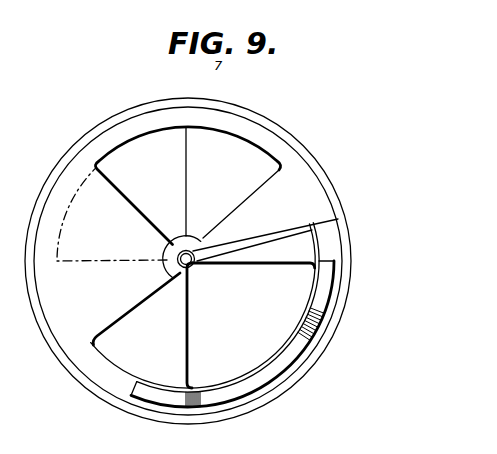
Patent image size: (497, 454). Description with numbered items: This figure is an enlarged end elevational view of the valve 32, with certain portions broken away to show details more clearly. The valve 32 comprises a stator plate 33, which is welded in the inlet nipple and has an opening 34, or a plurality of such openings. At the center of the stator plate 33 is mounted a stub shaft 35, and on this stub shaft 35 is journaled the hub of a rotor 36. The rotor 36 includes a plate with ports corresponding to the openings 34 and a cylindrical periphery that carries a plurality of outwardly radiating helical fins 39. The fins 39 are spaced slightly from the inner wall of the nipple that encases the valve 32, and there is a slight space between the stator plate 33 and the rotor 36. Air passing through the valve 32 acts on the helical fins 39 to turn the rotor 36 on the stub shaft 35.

The valve 32 is at (186, 168).
The stator plate 33 is at (347, 244).
The opening 34 is at (169, 202).
The stub shaft 35 is at (186, 259).
The rotor 36 is at (263, 387).
The helical fins 39 is at (322, 292).